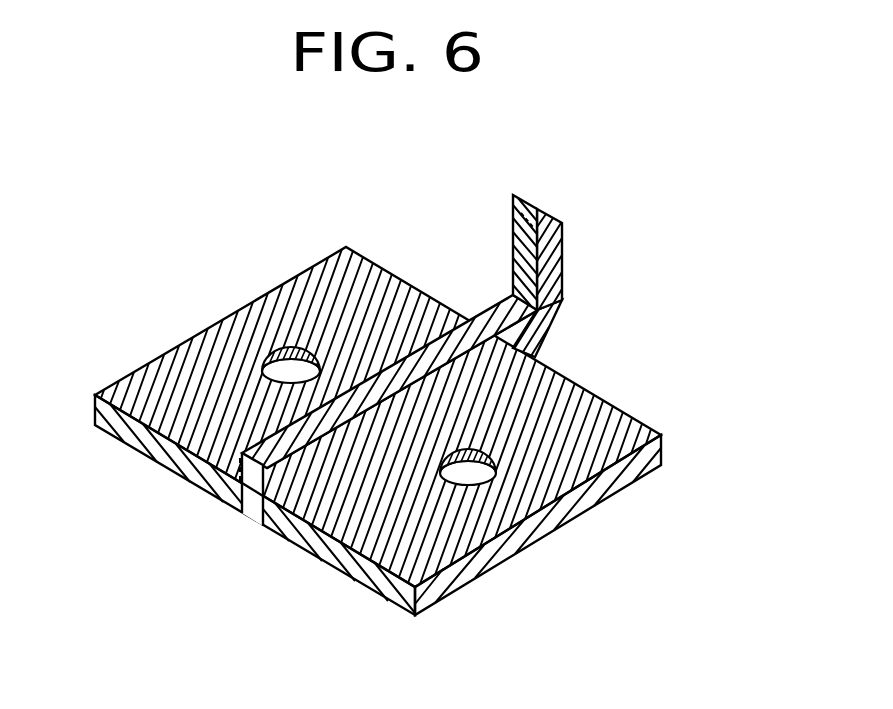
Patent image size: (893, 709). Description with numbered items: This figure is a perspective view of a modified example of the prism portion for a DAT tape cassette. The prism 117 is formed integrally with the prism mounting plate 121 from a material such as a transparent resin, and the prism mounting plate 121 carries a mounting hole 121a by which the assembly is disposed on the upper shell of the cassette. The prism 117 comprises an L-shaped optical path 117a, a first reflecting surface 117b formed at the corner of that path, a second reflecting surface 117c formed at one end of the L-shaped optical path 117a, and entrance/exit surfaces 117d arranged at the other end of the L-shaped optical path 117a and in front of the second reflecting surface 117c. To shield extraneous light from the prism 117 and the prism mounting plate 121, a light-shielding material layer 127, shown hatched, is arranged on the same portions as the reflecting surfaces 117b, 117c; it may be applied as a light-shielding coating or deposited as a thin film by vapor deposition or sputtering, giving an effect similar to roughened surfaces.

The prism 117 is at (424, 387).
The L-shaped optical path 117a is at (282, 483).
The first reflecting surface 117b is at (557, 325).
The second reflecting surface 117c is at (543, 213).
The entrance/exit surfaces 117d is at (523, 222).
The prism mounting plate 121 is at (618, 482).
The mounting hole 121a is at (272, 343).
The light-shielding material layer 127 is at (433, 543).